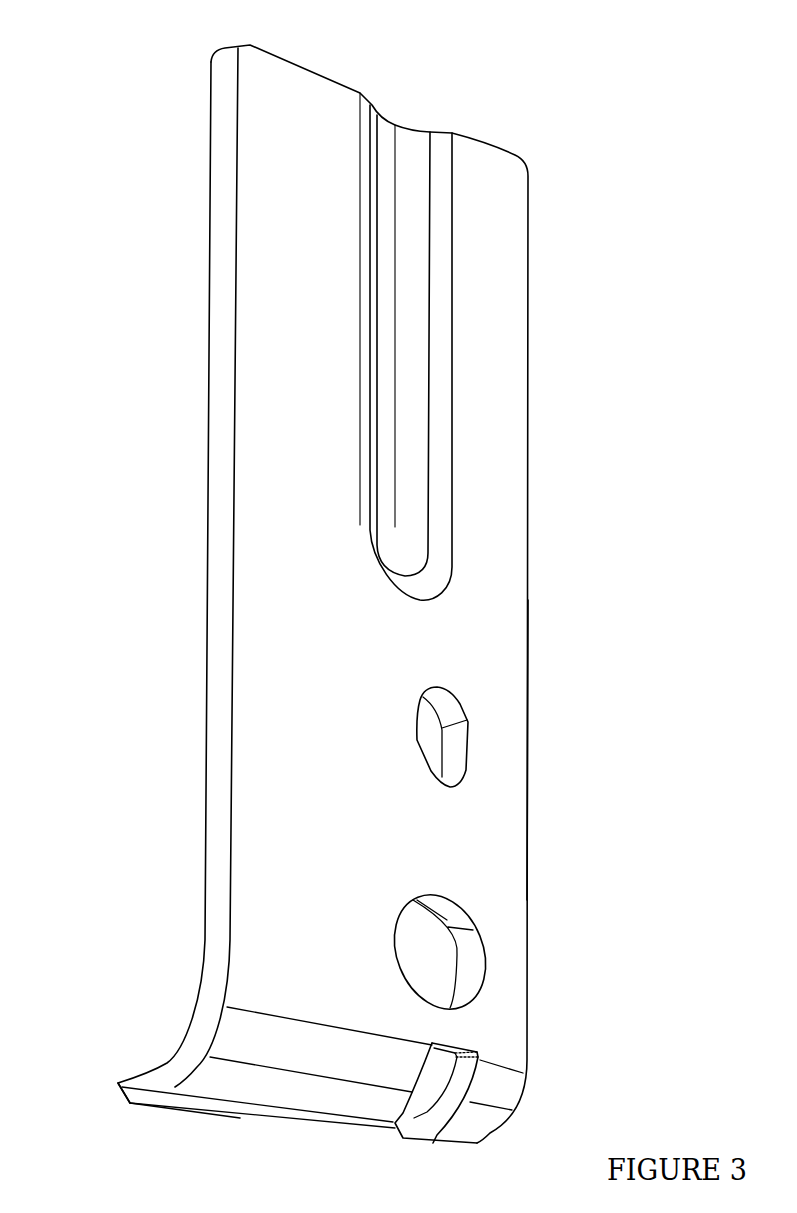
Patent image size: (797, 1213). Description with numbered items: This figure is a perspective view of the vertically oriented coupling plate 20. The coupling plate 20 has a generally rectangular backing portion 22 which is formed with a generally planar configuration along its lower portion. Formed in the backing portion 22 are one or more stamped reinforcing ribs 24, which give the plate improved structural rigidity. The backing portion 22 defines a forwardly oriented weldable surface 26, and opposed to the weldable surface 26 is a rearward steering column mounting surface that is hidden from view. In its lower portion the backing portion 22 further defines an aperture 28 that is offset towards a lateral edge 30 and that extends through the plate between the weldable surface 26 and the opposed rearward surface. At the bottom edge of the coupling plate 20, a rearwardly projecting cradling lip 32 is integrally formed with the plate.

The coupling plate 20 is at (523, 128).
The backing portion 22 is at (502, 693).
The stamped reinforcing ribs 24 is at (408, 338).
The weldable surface 26 is at (303, 282).
The aperture 28 is at (425, 960).
The lateral edge 30 is at (527, 783).
The cradling lip 32 is at (201, 1087).